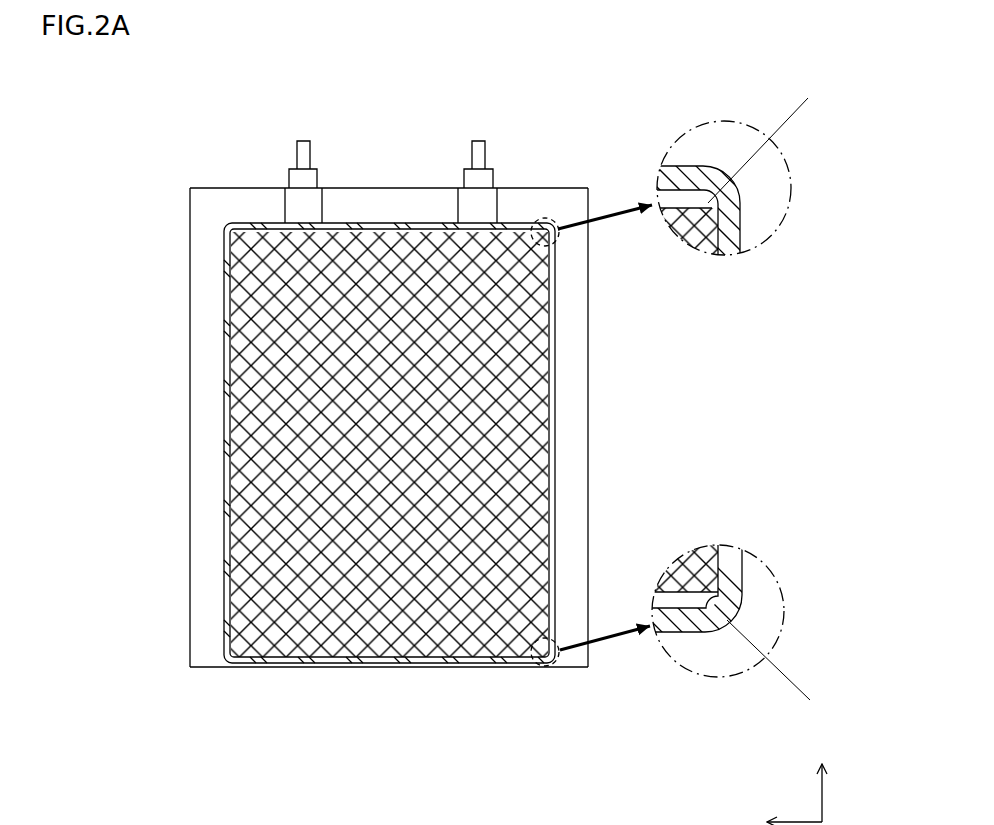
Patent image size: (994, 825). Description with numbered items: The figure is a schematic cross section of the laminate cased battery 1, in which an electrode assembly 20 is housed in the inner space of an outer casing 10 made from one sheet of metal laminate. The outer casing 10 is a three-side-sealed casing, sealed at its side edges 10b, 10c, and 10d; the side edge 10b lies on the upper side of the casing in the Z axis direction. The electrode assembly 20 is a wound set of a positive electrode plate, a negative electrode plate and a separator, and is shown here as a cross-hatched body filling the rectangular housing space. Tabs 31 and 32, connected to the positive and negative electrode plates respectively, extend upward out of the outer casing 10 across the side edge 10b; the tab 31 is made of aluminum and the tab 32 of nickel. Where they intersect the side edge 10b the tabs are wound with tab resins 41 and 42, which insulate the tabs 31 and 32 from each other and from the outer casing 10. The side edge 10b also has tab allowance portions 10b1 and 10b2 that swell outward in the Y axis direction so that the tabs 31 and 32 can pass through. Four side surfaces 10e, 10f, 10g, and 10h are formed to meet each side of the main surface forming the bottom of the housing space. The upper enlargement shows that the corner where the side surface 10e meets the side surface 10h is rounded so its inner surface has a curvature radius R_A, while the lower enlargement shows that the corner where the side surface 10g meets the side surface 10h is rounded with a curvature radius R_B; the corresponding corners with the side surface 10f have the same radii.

The laminate cased battery 1 is at (164, 102).
The outer casing 10 is at (207, 197).
The side edge 10b is at (420, 212).
The tab allowance portion 10b1 is at (286, 205).
The tab allowance portion 10b2 is at (494, 208).
The side edge 10c is at (571, 355).
The side edge 10d is at (204, 412).
The side surface 10e is at (359, 220).
The side surface 10f is at (221, 337).
The side surface 10g is at (318, 668).
The side surface 10h is at (557, 418).
The electrode assembly 20 is at (536, 493).
The tab 31 is at (301, 150).
The tab 32 is at (480, 150).
The tab resin 41 is at (292, 177).
The tab resin 42 is at (491, 178).